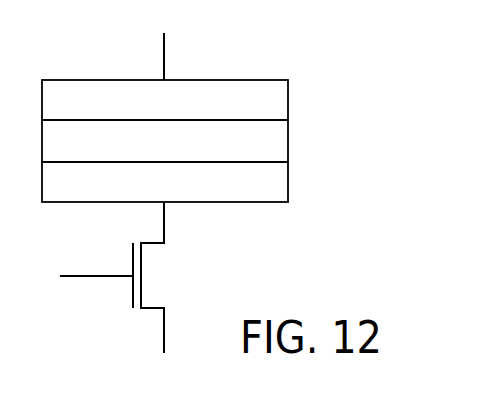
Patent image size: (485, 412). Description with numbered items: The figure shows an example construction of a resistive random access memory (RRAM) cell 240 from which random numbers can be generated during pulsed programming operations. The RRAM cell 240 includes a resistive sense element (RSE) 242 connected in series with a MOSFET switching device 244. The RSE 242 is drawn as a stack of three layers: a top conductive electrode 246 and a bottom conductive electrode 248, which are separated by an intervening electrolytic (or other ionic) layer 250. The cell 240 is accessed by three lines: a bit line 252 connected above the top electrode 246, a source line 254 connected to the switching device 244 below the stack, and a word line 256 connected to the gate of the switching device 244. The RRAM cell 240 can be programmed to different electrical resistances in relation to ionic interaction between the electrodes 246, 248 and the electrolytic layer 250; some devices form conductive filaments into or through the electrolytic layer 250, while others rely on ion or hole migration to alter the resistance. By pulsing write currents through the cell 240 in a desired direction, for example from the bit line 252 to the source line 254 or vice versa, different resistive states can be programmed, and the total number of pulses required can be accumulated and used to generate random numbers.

The resistive random access memory (RRAM) cell 240 is at (216, 195).
The resistive sense element (RSE) 242 is at (200, 107).
The MOSFET switching device 244 is at (141, 258).
The top conductive electrode 246 is at (289, 101).
The bottom conductive electrode 248 is at (289, 183).
The electrolytic layer 250 is at (289, 143).
The bit line 252 is at (163, 57).
The source line 254 is at (163, 341).
The word line 256 is at (87, 277).